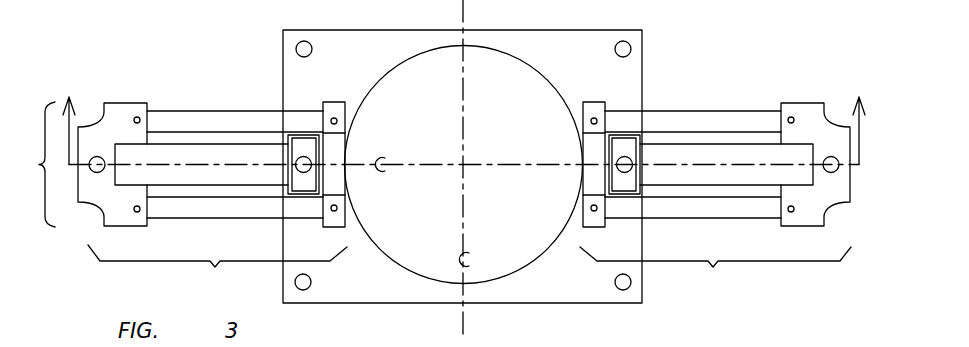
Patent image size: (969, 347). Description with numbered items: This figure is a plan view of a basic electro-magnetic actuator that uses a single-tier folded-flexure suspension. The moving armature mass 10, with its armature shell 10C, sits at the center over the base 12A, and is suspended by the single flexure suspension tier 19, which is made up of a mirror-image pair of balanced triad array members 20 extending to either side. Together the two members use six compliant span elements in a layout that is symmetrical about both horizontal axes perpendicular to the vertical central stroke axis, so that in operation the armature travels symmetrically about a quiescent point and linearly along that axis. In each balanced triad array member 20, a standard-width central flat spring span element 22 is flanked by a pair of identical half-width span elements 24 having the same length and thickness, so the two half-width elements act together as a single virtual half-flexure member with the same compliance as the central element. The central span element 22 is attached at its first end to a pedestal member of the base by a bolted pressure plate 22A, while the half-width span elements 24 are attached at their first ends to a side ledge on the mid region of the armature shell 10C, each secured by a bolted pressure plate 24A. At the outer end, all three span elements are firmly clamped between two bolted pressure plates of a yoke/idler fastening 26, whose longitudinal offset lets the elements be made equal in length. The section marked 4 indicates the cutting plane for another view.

The moving armature mass 10 is at (369, 50).
The armature shell 10C is at (443, 125).
The base 12A is at (590, 288).
The single flexure suspension tier 19 is at (34, 164).
The balanced triad array member 20 is at (469, 270).
The central flat spring span element 22 is at (220, 178).
The bolted pressure plate 22A is at (305, 143).
The half-width span element 24 is at (228, 122).
The bolted pressure plate 24A is at (337, 108).
The yoke/idler fastening 26 is at (110, 150).
The section line 4- 4 is at (465, 117).